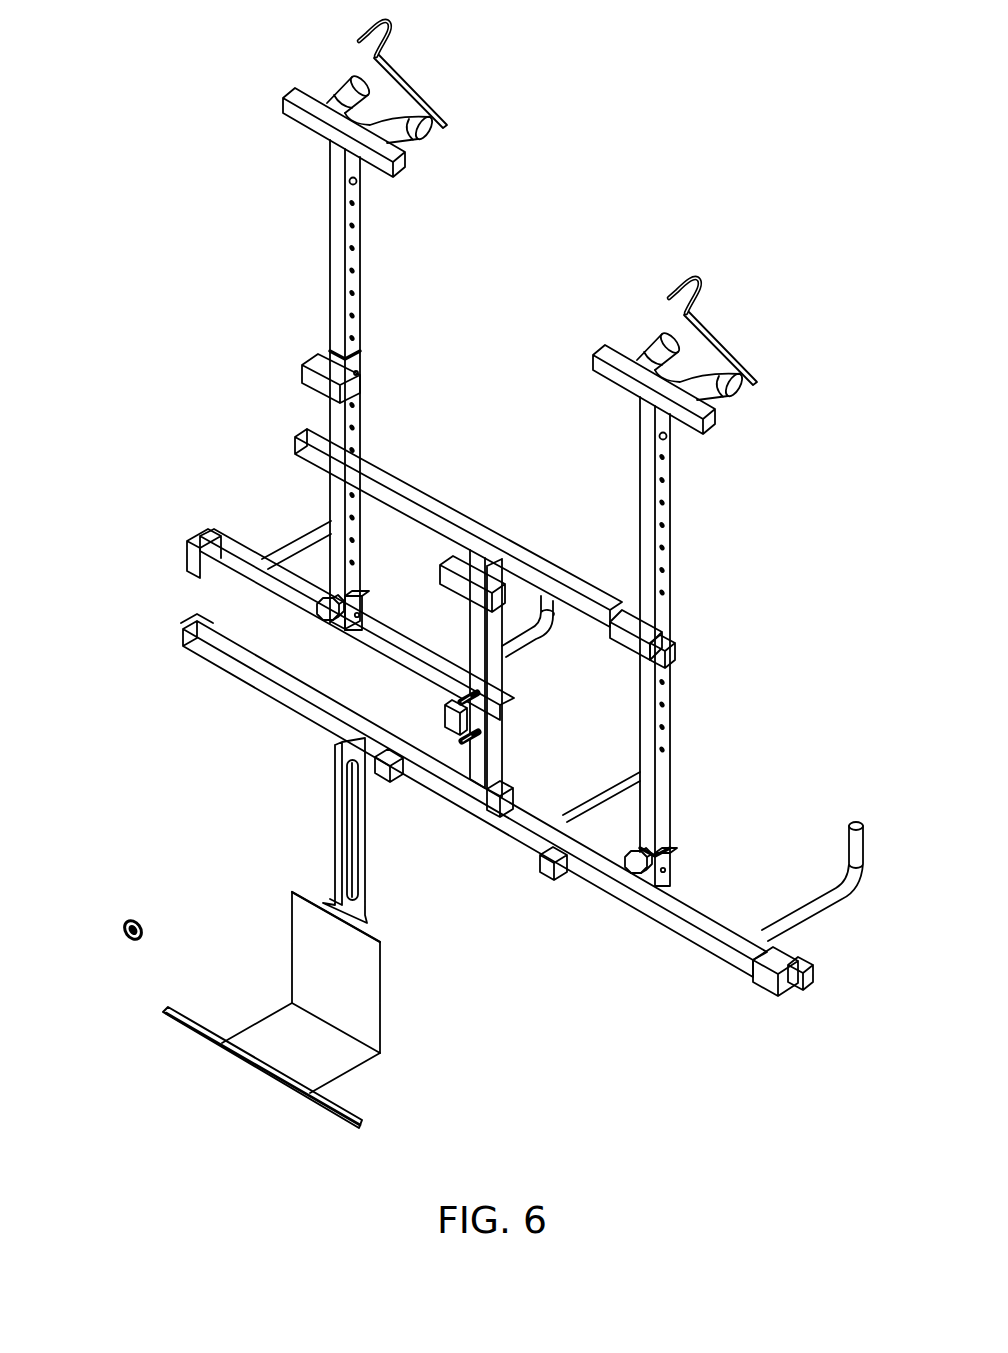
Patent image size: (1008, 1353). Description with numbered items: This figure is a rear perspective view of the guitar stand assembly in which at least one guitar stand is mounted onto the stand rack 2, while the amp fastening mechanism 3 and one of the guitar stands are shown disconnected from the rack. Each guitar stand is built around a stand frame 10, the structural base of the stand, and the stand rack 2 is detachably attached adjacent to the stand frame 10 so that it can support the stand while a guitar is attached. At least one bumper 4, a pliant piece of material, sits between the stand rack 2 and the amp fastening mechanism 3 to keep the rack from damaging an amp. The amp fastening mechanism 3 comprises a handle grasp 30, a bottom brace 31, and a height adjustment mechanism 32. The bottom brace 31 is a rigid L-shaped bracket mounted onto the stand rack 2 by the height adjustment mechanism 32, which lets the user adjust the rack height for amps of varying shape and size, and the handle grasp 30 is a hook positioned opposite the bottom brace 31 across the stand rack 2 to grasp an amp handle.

The stand rack 2 is at (276, 697).
The amp fastening mechanism 3 is at (300, 1039).
The bumper 4 is at (400, 773).
The stand frame 10 is at (337, 263).
The handle grasp 30 is at (452, 593).
The bottom brace 31 is at (271, 1010).
The height adjustment mechanism 32 is at (462, 739).